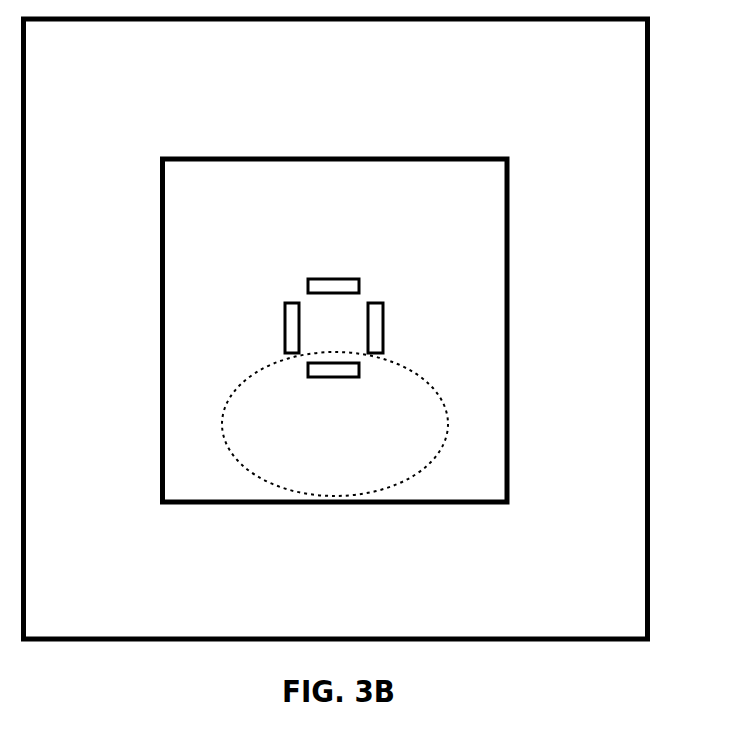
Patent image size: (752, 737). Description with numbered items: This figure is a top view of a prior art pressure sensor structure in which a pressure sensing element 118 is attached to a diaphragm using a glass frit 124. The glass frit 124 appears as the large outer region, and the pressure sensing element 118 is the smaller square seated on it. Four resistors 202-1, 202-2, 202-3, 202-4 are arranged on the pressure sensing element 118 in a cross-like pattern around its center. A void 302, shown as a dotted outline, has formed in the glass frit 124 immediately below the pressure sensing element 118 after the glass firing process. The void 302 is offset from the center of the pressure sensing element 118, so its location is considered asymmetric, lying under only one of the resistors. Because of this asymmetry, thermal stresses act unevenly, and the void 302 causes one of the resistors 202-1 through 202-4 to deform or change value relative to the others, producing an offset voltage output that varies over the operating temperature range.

The glass frit 124 is at (623, 390).
The pressure sensing element 118 is at (485, 358).
The void 302 is at (448, 440).
The resistor 202-1 is at (383, 307).
The resistor 202-2 is at (334, 279).
The resistor 202-3 is at (285, 343).
The resistor 202-4 is at (313, 377).